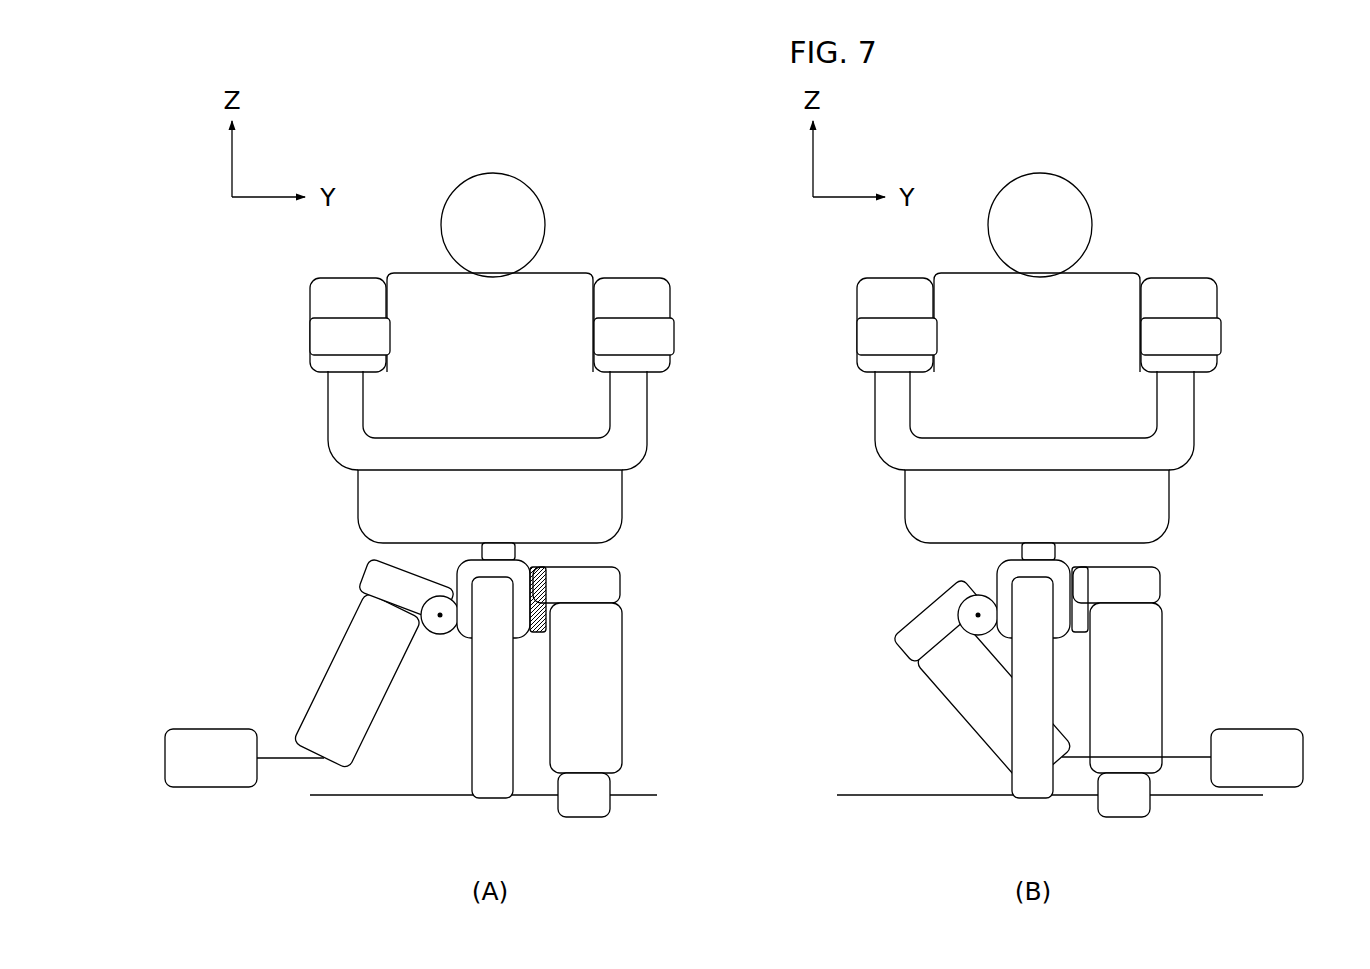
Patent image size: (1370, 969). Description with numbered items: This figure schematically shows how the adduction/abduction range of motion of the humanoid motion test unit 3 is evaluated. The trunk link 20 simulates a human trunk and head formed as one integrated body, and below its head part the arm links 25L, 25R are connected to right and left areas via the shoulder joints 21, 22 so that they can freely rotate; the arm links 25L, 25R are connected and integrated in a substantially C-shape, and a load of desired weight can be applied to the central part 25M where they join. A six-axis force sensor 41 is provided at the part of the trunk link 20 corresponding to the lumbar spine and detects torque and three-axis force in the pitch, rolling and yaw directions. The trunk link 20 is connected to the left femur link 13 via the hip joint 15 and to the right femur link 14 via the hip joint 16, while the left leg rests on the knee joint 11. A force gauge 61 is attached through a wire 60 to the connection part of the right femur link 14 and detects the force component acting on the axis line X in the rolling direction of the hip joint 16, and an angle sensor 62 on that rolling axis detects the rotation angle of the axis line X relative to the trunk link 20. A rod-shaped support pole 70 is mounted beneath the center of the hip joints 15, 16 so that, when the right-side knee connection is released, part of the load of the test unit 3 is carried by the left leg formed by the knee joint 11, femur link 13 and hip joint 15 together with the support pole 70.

The humanoid motion test unit 3 is at (588, 185).
The trunk link 20 is at (428, 312).
The shoulder joint 21 is at (672, 334).
The shoulder joint 22 is at (310, 342).
The right arm link 25R is at (338, 411).
The left arm link 25L is at (634, 411).
The central part 25M is at (492, 455).
The right-side hip joint 16 is at (368, 577).
The right-side femur link 14 is at (331, 661).
The angle sensor 62 is at (451, 598).
The axis line X is at (440, 635).
The support pole 70 is at (497, 780).
The left-side hip joint 15 is at (621, 580).
The left-side femur link 13 is at (623, 661).
The left-side knee joint 11 is at (611, 801).
The 6-axis force sensor 41 is at (543, 644).
The force gauge 61 is at (210, 729).
The wire 60 is at (290, 760).